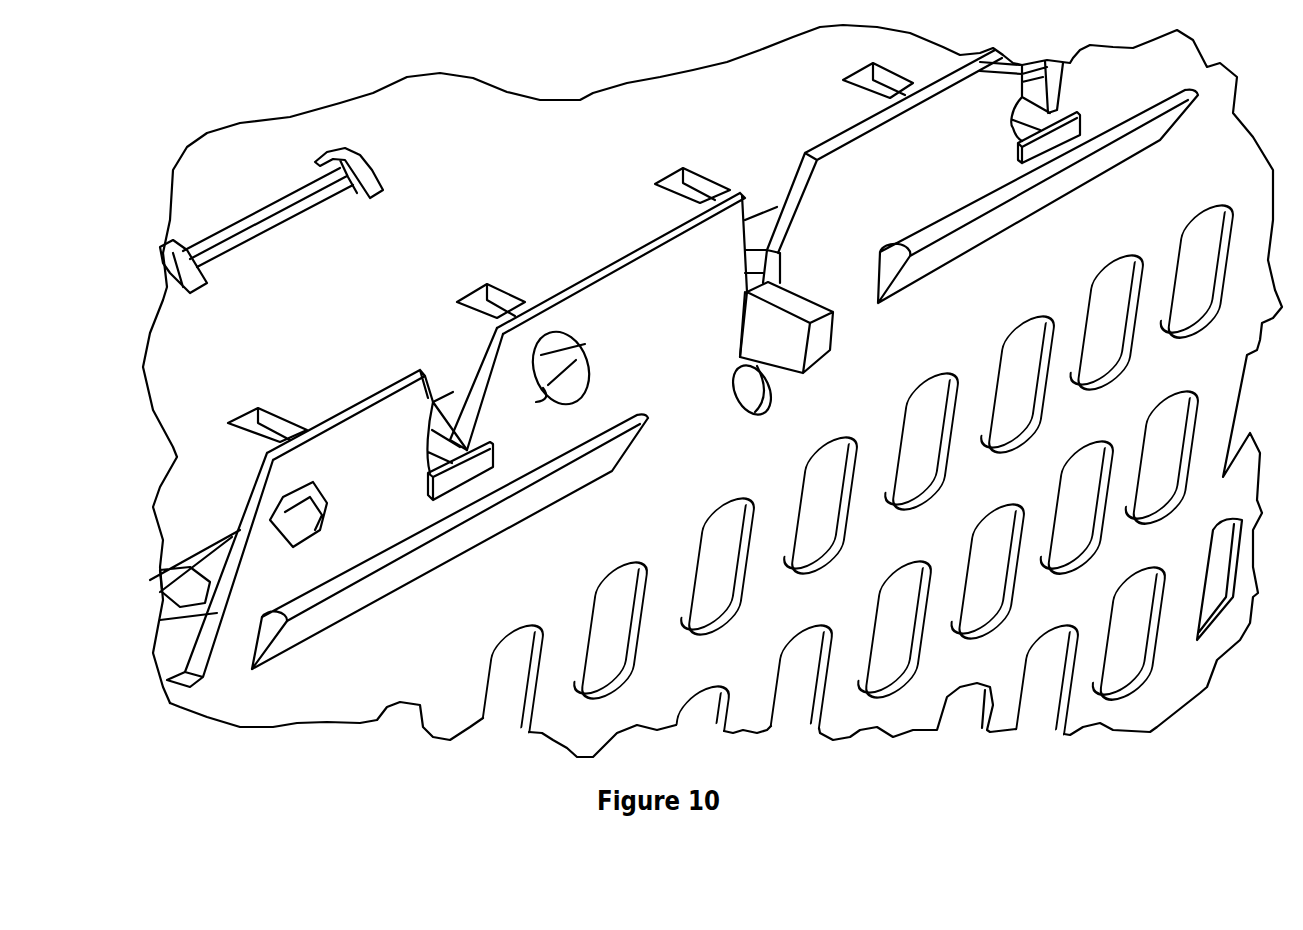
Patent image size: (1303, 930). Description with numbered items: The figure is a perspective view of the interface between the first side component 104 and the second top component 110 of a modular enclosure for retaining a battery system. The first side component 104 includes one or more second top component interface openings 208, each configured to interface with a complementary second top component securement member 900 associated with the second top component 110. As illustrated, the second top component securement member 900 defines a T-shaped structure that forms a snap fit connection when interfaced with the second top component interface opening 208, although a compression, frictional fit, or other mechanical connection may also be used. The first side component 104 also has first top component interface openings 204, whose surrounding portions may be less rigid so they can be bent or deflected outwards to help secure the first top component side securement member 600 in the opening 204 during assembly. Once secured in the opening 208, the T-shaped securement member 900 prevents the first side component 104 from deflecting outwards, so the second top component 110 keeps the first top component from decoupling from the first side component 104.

The first side component 104 is at (583, 742).
The second top component 110 is at (257, 167).
The first top component interface opening 204 is at (232, 684).
The second top component interface opening 208 is at (400, 461).
The first top component side securement member 600 is at (291, 640).
The second top component securement member 900 is at (448, 496).